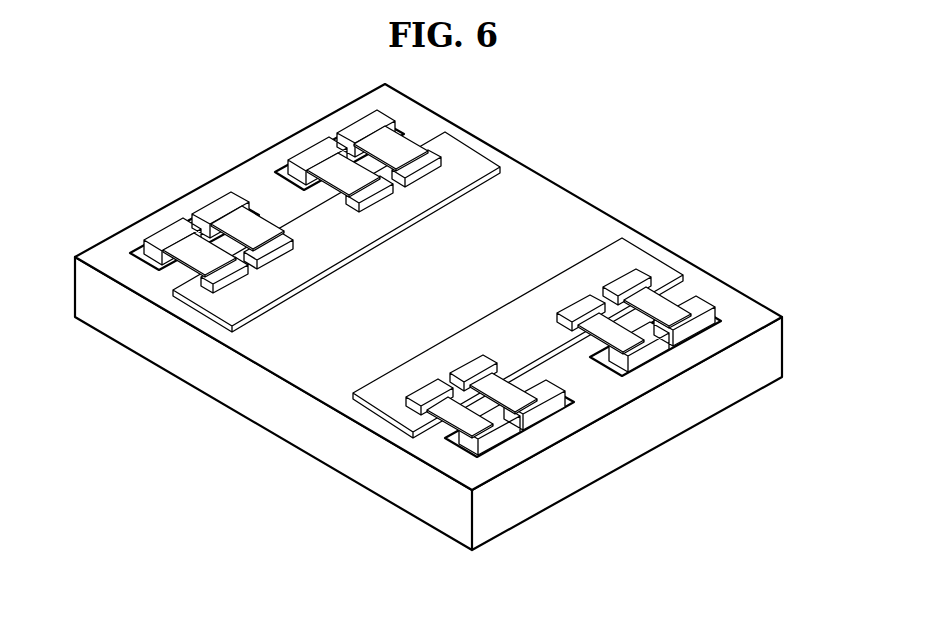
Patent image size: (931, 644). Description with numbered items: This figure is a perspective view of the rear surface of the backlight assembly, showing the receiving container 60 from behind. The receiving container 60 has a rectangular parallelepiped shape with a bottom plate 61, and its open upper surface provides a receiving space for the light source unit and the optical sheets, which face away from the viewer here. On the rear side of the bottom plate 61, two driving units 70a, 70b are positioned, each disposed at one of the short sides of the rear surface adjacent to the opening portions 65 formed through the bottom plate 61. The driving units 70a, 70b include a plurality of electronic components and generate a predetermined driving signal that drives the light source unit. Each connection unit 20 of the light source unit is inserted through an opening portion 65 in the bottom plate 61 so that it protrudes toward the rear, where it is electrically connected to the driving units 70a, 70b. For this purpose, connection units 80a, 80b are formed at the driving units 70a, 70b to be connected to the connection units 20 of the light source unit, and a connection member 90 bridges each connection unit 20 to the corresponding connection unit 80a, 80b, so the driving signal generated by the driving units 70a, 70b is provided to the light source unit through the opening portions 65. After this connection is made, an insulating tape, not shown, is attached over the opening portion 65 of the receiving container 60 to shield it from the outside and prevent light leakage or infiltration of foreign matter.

The connection unit 20 is at (172, 236).
The receiving container 60 is at (748, 240).
The bottom plate 61 is at (570, 208).
The opening portion 65 is at (455, 453).
The driving unit 70a is at (460, 156).
The driving unit 70b is at (637, 263).
The connection unit 80a is at (212, 280).
The connection unit 80b is at (413, 398).
The connection member 90 is at (183, 255).